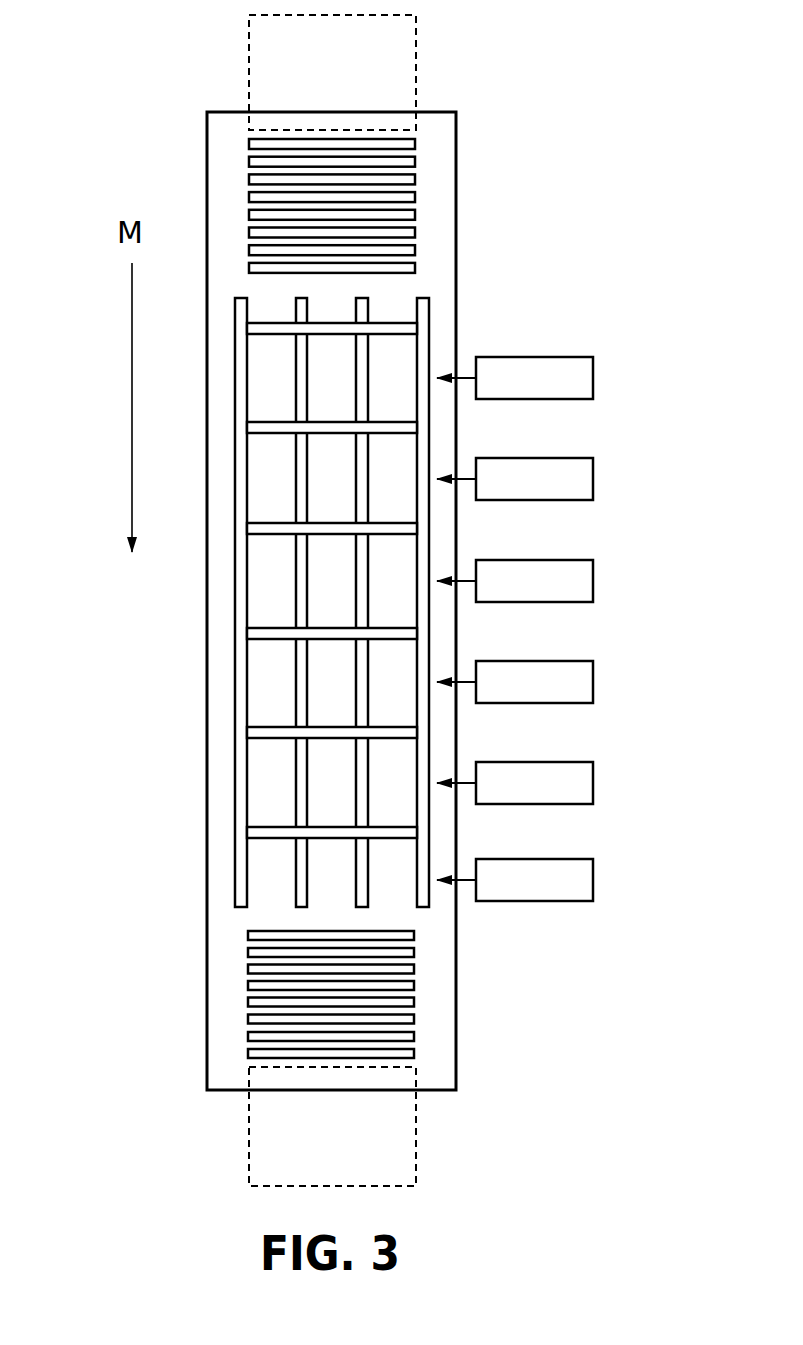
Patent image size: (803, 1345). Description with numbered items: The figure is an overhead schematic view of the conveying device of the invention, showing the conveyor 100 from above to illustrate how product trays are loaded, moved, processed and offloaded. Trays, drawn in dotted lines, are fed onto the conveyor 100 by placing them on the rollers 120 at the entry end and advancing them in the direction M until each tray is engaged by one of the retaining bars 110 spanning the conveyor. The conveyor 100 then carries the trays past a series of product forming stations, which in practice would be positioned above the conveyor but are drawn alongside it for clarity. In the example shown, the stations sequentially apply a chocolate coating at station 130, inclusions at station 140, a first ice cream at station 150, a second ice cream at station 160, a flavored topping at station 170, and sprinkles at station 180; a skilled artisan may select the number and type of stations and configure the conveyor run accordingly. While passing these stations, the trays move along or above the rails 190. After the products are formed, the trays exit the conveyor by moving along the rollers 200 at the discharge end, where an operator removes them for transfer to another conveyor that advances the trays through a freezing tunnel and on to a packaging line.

The conveyor 100 is at (500, 174).
The retaining bars 110 is at (285, 337).
The rollers 120 is at (241, 178).
The chocolate coating station 130 is at (593, 378).
The inclusions station 140 is at (593, 479).
The first ice cream station 150 is at (593, 581).
The second ice cream station 160 is at (593, 682).
The flavored topping station 170 is at (593, 783).
The sprinkles station 180 is at (593, 880).
The rails 190 is at (310, 907).
The rollers 200 is at (240, 1015).